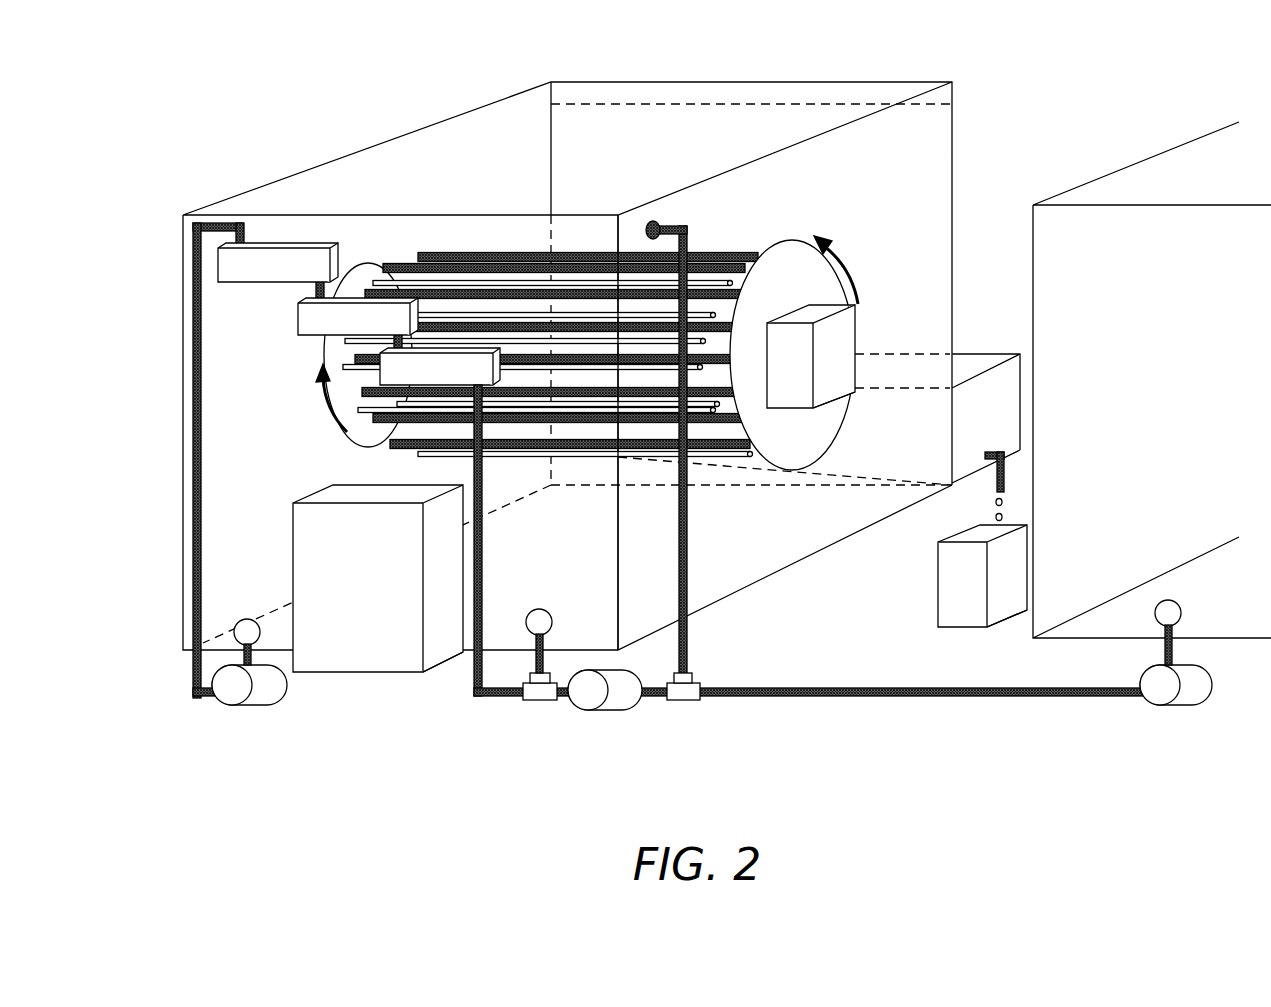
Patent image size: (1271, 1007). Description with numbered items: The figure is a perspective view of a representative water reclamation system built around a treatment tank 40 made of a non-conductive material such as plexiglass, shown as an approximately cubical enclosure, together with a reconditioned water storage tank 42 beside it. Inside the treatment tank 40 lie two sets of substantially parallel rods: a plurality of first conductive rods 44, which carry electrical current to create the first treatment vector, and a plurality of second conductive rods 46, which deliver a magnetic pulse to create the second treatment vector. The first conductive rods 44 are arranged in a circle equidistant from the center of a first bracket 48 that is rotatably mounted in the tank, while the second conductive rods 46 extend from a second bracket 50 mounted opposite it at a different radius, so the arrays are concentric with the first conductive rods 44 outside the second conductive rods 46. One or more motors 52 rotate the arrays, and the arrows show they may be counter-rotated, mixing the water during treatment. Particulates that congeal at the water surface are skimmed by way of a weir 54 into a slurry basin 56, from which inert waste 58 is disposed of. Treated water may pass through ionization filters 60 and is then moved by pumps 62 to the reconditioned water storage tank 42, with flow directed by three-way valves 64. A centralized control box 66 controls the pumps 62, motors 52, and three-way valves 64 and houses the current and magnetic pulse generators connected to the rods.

The treatment tank 40 is at (372, 165).
The reconditioned water storage tank 42 is at (1192, 155).
The first conductive rod 44 is at (748, 260).
The second conductive rod 46 is at (705, 287).
The first bracket 48 is at (800, 242).
The second bracket 50 is at (353, 433).
The motor 52 is at (832, 345).
The weir 54 is at (960, 101).
The slurry basin 56 is at (1010, 380).
The inert waste 58 is at (1017, 570).
The ionization filter 60 is at (228, 276).
The pump 62 is at (270, 697).
The three-way valve 64 is at (543, 695).
The control box 66 is at (355, 655).